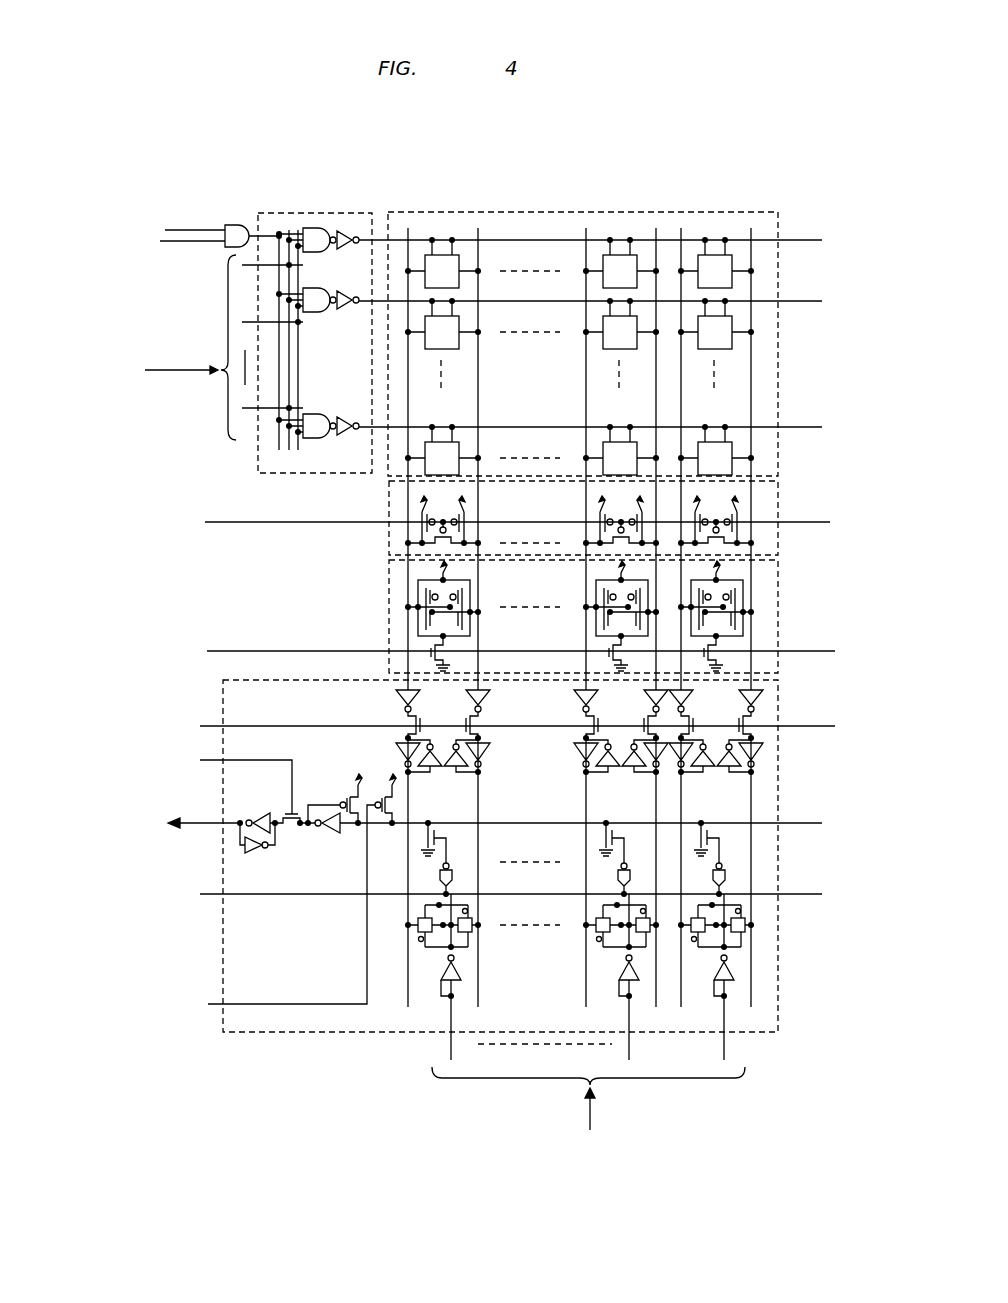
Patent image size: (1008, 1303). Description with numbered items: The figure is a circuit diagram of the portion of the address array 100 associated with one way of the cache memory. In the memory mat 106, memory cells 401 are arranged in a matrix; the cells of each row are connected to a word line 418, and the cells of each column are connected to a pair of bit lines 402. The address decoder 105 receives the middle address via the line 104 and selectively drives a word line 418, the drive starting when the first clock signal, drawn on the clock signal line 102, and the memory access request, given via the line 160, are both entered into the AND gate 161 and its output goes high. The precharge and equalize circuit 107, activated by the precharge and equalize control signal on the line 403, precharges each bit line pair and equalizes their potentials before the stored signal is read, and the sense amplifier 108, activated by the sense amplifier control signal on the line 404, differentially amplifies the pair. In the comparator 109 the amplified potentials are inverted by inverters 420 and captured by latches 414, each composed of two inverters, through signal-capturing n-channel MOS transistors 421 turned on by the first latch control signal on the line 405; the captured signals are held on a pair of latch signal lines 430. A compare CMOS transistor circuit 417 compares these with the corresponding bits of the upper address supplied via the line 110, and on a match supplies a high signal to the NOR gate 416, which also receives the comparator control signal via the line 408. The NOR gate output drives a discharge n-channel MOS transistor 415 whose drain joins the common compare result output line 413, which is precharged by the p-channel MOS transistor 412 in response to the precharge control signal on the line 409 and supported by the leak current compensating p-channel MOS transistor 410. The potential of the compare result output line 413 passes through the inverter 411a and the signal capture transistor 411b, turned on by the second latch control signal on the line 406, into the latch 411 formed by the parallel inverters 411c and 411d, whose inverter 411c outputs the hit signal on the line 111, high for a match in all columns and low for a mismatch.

The address array 100 is at (535, 188).
The clock signal 102 is at (191, 243).
The line 104 is at (198, 370).
The address decoder 105 is at (258, 443).
The memory mat 106 is at (778, 323).
The precharge and equalize circuit 107 is at (778, 530).
The sense amplifier 108 is at (778, 660).
The comparator 109 is at (778, 935).
The line 110 is at (585, 1118).
The line 111 is at (195, 826).
The line 160 is at (176, 229).
The AND gate 161 is at (258, 213).
The memory cell 401 is at (458, 280).
The pair of bit lines 402 is at (408, 370).
The line 403 is at (385, 524).
The line 404 is at (310, 650).
The line 405 is at (283, 682).
The line 406 is at (258, 726).
The line 408 is at (268, 896).
The line 409 is at (277, 1004).
The leak current compensating p-channel MOS transistor 410 is at (356, 790).
The latch 411 is at (297, 839).
The inverter 411a is at (337, 840).
The signal capture n-channel MOS transistor 411b is at (300, 812).
The inverter 411c is at (260, 812).
The inverter 411d is at (262, 855).
The p-channel MOS transistor 412 is at (390, 790).
The compare result output line 413 is at (820, 822).
The latch 414 is at (420, 760).
The discharge n-channel MOS transistor 415 is at (447, 830).
The NOR gate 416 is at (450, 866).
The compare CMOS transistor circuit 417 is at (475, 935).
The word line 418 is at (795, 239).
The inverter 420 is at (413, 710).
The signal-capturing n-channel MOS transistor 421 is at (490, 728).
The pair of latch signal lines 430 is at (481, 975).